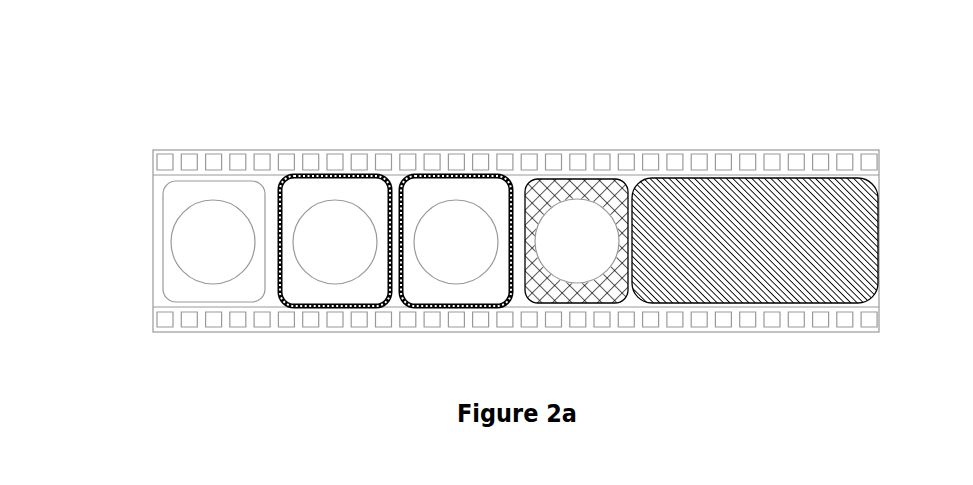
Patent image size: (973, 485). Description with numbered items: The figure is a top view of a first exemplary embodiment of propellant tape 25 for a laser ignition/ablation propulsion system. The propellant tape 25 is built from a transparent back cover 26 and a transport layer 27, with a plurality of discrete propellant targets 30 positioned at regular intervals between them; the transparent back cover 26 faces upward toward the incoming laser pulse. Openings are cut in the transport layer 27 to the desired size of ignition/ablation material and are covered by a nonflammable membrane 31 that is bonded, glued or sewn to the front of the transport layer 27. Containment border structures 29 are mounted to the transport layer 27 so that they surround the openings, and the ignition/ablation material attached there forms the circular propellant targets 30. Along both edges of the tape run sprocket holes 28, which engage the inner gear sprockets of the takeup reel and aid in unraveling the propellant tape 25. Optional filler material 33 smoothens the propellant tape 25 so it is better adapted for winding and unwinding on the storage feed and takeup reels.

The propellant tape 25 is at (517, 58).
The transparent back cover 26 is at (277, 175).
The transport layer 27 is at (205, 292).
The sprocket holes 28 is at (672, 158).
The containment border structures 29 is at (423, 177).
The propellant targets 30 is at (188, 257).
The nonflammable membrane 31 is at (870, 278).
The filler material 33 is at (607, 282).